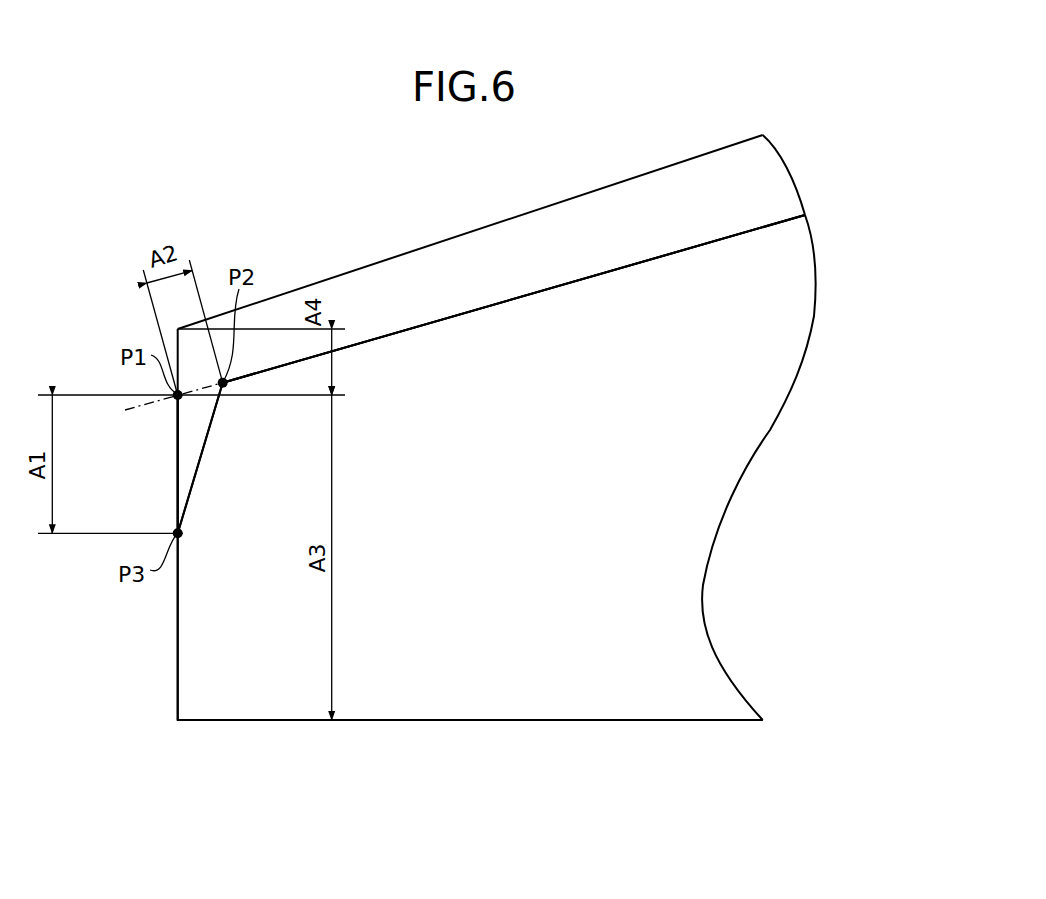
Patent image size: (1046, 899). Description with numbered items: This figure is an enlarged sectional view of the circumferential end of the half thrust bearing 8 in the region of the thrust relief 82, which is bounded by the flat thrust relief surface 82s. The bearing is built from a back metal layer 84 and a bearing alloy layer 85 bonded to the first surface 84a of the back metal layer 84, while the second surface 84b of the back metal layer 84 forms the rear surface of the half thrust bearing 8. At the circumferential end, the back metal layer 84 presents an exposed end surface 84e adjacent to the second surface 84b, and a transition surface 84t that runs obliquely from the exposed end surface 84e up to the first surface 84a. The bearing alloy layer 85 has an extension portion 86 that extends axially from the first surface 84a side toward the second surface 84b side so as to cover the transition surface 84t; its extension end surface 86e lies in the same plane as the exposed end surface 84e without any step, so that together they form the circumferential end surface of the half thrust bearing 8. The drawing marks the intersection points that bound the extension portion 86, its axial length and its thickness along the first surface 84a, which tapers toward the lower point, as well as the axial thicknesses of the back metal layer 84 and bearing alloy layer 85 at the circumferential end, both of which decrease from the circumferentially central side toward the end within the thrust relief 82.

The half thrust bearing 8 is at (821, 592).
The thrust relief 82 is at (478, 230).
The thrust relief surface 82s is at (514, 299).
The back metal layer 84 is at (797, 297).
The first surface 84a is at (615, 268).
The second surface 84b is at (522, 720).
The exposed end surface 84e is at (177, 662).
The transition surface 84t is at (201, 460).
The bearing alloy layer 85 is at (770, 172).
The extension portion 86 is at (193, 423).
The extension end surface 86e is at (177, 498).